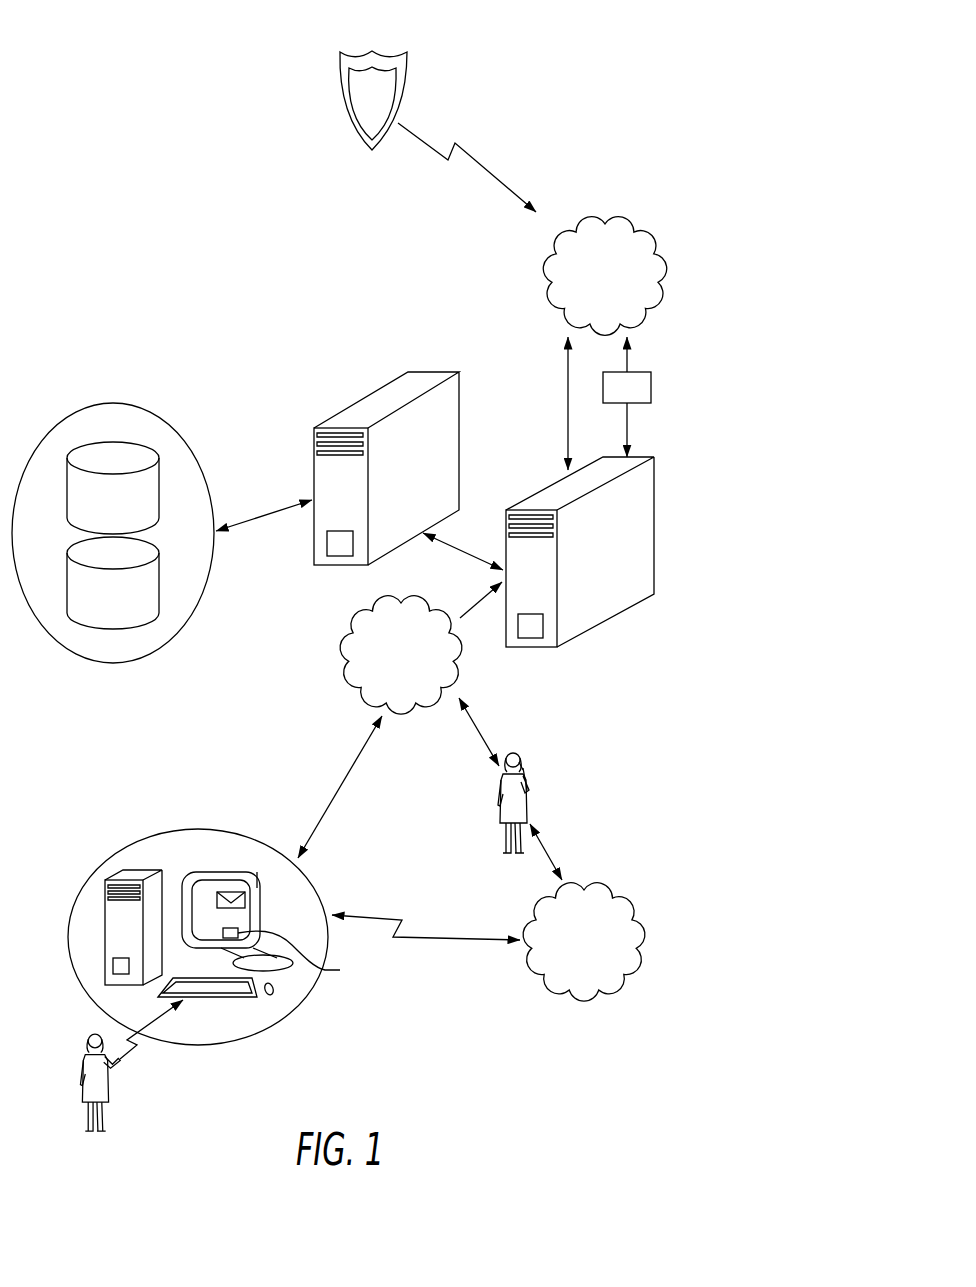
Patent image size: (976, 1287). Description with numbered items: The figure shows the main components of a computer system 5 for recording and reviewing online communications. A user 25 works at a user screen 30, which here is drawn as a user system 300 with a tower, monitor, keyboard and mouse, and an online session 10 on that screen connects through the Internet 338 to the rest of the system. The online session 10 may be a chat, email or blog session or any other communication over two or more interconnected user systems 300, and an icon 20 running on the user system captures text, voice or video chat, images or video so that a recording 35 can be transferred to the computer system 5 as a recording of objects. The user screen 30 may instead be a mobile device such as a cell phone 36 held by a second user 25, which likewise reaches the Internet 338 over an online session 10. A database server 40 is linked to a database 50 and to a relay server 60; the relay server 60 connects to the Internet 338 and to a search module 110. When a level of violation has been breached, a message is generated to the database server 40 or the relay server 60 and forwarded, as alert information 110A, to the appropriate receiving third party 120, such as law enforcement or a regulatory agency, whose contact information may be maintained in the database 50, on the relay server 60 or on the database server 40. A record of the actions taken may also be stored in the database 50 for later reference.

The computer system 5 is at (99, 380).
The online session 10 is at (550, 847).
The icon 20 is at (272, 926).
The user 25 is at (73, 1090).
The user screen 30 is at (215, 895).
The recording 35 is at (233, 897).
The cell phone 36 is at (518, 770).
The database server 40 is at (448, 412).
The database 50 is at (148, 409).
The relay server 60 is at (640, 582).
The search module 110 is at (651, 385).
The alert information 110A is at (567, 386).
The third parties 120 is at (402, 90).
The user system 300 is at (177, 863).
The Internet 338 is at (662, 241).